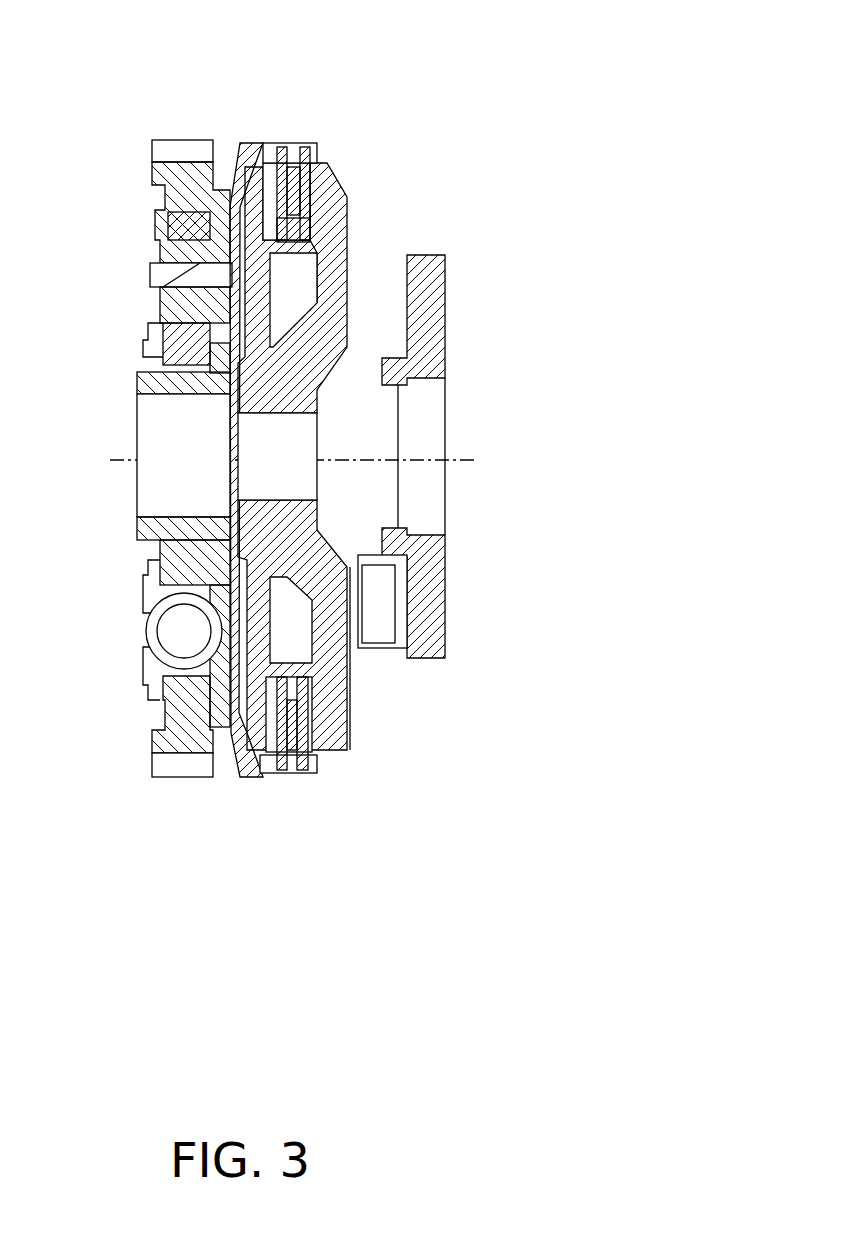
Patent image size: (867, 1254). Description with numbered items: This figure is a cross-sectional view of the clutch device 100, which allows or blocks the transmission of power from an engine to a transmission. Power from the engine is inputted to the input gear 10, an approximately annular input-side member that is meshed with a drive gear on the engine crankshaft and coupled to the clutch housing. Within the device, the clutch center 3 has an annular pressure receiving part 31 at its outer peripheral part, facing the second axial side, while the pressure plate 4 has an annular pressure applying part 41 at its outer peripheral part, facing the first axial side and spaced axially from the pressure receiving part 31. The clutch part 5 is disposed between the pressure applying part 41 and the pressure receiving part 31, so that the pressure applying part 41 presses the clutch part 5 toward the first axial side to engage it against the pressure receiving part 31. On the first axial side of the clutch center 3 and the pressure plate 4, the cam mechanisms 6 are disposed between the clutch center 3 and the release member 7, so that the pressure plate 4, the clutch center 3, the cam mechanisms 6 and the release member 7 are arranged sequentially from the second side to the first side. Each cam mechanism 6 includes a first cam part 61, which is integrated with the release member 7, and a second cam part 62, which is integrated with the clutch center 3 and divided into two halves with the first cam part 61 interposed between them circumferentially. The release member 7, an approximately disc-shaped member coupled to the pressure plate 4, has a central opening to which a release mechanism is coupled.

The clutch device 100 is at (460, 97).
The input gear 10 is at (155, 140).
The pressure applying part 41 is at (242, 172).
The clutch part 5 is at (293, 143).
The pressure receiving part 31 is at (327, 197).
The clutch center 3 is at (347, 250).
The pressure plate 4 is at (272, 300).
The release member 7 is at (445, 588).
The cam mechanism 6 is at (377, 655).
The first cam part 61 is at (398, 650).
The second cam part 62 is at (357, 645).